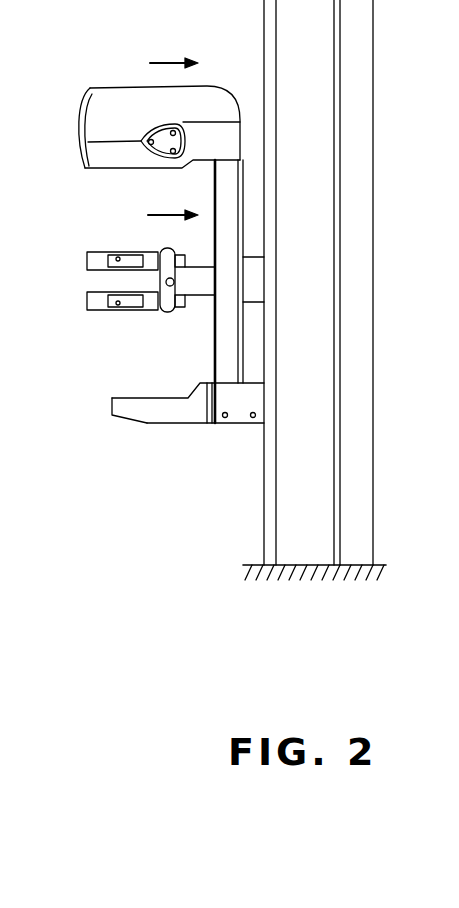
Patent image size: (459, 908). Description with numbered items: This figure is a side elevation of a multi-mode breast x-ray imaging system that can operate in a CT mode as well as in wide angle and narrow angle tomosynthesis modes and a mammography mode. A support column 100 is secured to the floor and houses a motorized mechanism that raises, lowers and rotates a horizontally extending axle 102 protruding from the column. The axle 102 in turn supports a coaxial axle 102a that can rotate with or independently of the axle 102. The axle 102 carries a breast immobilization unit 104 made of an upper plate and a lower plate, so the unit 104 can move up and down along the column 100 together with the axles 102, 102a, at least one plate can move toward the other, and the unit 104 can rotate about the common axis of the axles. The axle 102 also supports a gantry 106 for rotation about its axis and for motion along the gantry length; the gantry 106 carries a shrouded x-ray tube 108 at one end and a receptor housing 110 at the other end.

The support column 100 is at (306, 547).
The axle 102 is at (257, 256).
The coaxial axle 102a is at (199, 299).
The breast immobilization unit 104 is at (79, 253).
The gantry 106 is at (214, 184).
The shrouded x-ray tube 108 is at (92, 97).
The receptor housing 110 is at (137, 423).